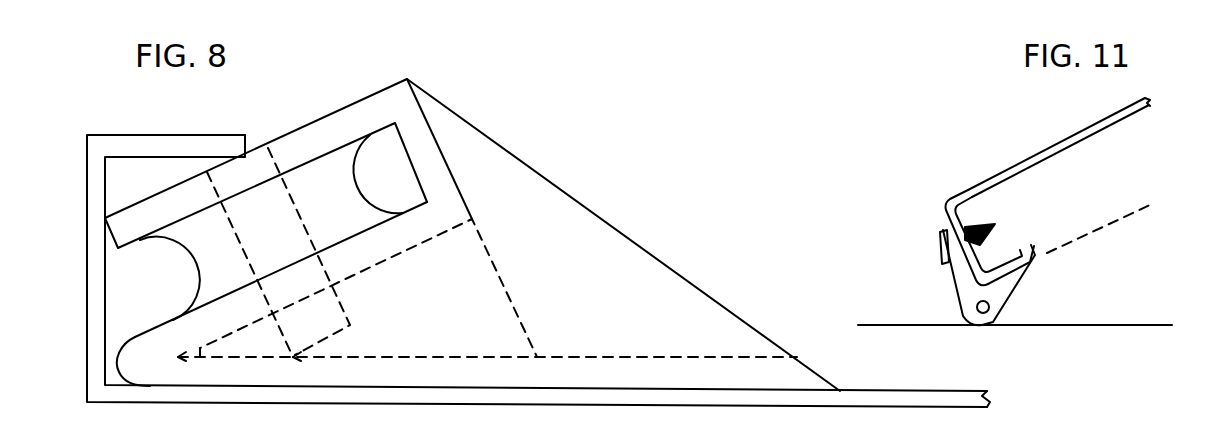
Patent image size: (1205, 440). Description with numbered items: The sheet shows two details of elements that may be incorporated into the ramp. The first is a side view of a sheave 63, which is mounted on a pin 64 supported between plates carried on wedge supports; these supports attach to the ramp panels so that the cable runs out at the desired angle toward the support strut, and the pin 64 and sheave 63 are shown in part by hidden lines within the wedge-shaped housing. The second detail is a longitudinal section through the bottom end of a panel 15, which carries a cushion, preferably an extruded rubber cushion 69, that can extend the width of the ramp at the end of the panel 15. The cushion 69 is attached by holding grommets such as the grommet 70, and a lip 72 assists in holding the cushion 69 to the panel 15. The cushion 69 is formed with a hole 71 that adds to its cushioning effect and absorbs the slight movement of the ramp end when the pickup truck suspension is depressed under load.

In FIG. 11, the panel 15 is at (1037, 153).
In FIG. 8, the sheave 63 is at (345, 222).
In FIG. 8, the pin 64 is at (330, 313).
In FIG. 11, the extruded rubber cushion 69 is at (1010, 295).
In FIG. 11, the grommet 70 is at (965, 223).
In FIG. 11, the hole 71 is at (972, 325).
In FIG. 11, the lip 72 is at (1030, 242).